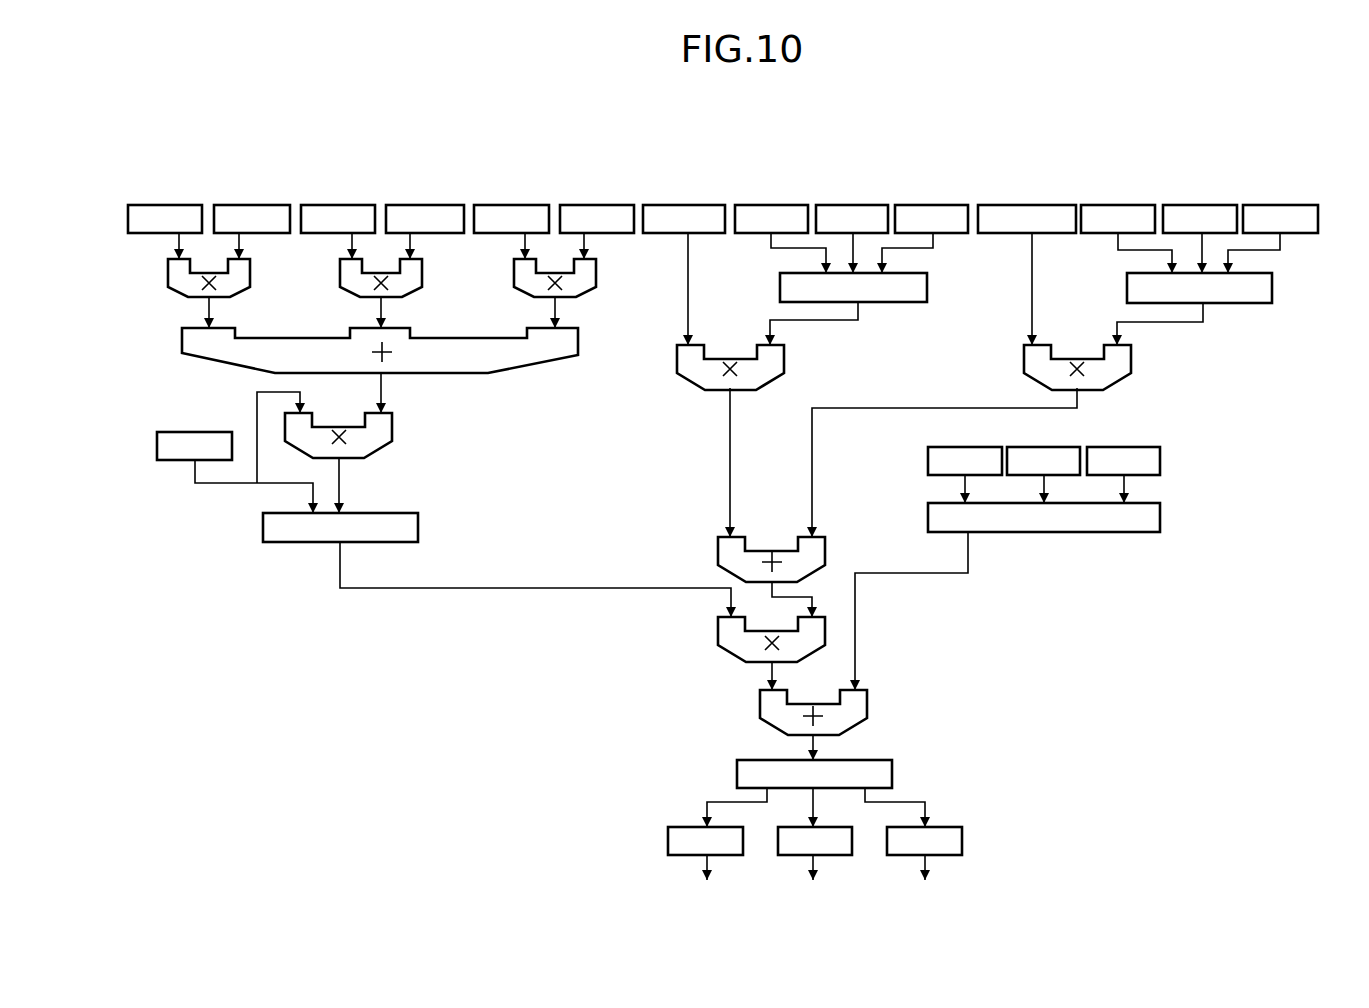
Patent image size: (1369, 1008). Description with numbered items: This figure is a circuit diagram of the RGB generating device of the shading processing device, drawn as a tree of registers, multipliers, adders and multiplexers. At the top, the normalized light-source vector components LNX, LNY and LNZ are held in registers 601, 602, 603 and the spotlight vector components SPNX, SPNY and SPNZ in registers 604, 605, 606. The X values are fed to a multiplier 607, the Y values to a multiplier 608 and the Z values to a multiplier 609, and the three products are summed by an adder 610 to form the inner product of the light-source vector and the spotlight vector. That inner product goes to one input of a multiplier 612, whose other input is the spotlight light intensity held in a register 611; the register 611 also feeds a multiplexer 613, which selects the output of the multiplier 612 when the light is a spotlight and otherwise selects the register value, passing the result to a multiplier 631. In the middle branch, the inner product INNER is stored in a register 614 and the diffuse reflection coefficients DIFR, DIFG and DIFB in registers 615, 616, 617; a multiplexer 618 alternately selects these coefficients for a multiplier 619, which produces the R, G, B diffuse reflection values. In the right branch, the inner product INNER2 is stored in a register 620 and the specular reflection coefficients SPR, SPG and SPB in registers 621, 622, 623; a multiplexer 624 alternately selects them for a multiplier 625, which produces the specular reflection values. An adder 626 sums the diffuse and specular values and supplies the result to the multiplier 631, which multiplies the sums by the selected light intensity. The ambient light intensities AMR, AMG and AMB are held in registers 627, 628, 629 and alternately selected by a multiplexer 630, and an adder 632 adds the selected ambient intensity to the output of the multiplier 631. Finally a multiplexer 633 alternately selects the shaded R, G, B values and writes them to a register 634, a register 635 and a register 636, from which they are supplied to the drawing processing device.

The register 601 is at (161, 204).
The register 602 is at (333, 204).
The register 603 is at (510, 204).
The register 604 is at (248, 204).
The register 605 is at (422, 204).
The register 606 is at (597, 204).
The multiplier 607 is at (250, 290).
The multiplier 608 is at (422, 290).
The multiplier 609 is at (596, 290).
The adder 610 is at (537, 366).
The register 611 is at (192, 431).
The multiplier 612 is at (393, 426).
The multiplexer 613 is at (418, 528).
The register 614 is at (685, 204).
The register 615 is at (768, 204).
The register 616 is at (851, 204).
The register 617 is at (934, 204).
The multiplexer 618 is at (905, 302).
The multiplier 619 is at (784, 355).
The register 620 is at (1028, 204).
The register 621 is at (1116, 204).
The register 622 is at (1201, 204).
The register 623 is at (1281, 204).
The multiplexer 624 is at (1272, 288).
The multiplier 625 is at (1131, 355).
The adder 626 is at (825, 548).
The register 627 is at (937, 447).
The register 628 is at (1016, 447).
The register 629 is at (1097, 447).
The multiplexer 630 is at (1160, 517).
The multiplier 631 is at (716, 632).
The adder 632 is at (867, 702).
The multiplexer 633 is at (892, 772).
The register 634 is at (690, 827).
The register 635 is at (838, 857).
The register 636 is at (945, 827).